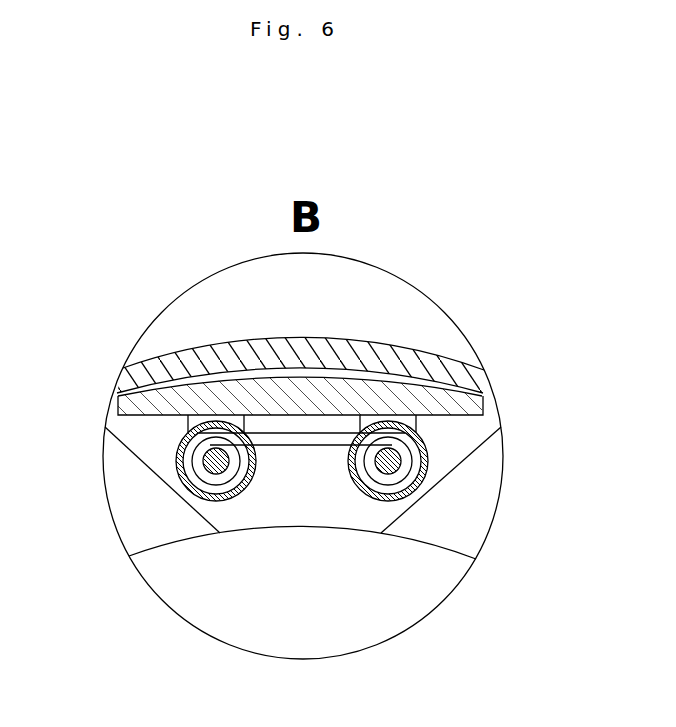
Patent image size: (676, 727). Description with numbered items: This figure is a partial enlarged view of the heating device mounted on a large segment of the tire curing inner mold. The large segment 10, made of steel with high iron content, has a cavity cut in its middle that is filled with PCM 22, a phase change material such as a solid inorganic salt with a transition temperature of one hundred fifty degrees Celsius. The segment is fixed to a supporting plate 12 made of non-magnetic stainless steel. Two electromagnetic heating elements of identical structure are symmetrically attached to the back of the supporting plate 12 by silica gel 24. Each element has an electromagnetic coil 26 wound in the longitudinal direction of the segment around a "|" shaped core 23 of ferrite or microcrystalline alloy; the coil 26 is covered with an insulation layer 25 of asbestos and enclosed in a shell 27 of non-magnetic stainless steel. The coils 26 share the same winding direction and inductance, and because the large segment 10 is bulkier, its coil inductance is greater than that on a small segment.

The large segment 10 is at (217, 340).
The PCM 22 is at (289, 368).
The supporting plate 12 is at (330, 398).
The silica gel 24 is at (465, 392).
The "|" shaped core 23 is at (217, 457).
The electromagnetic coil 26 is at (242, 490).
The shell 27 is at (640, 594).
The insulation layer 25 is at (406, 481).